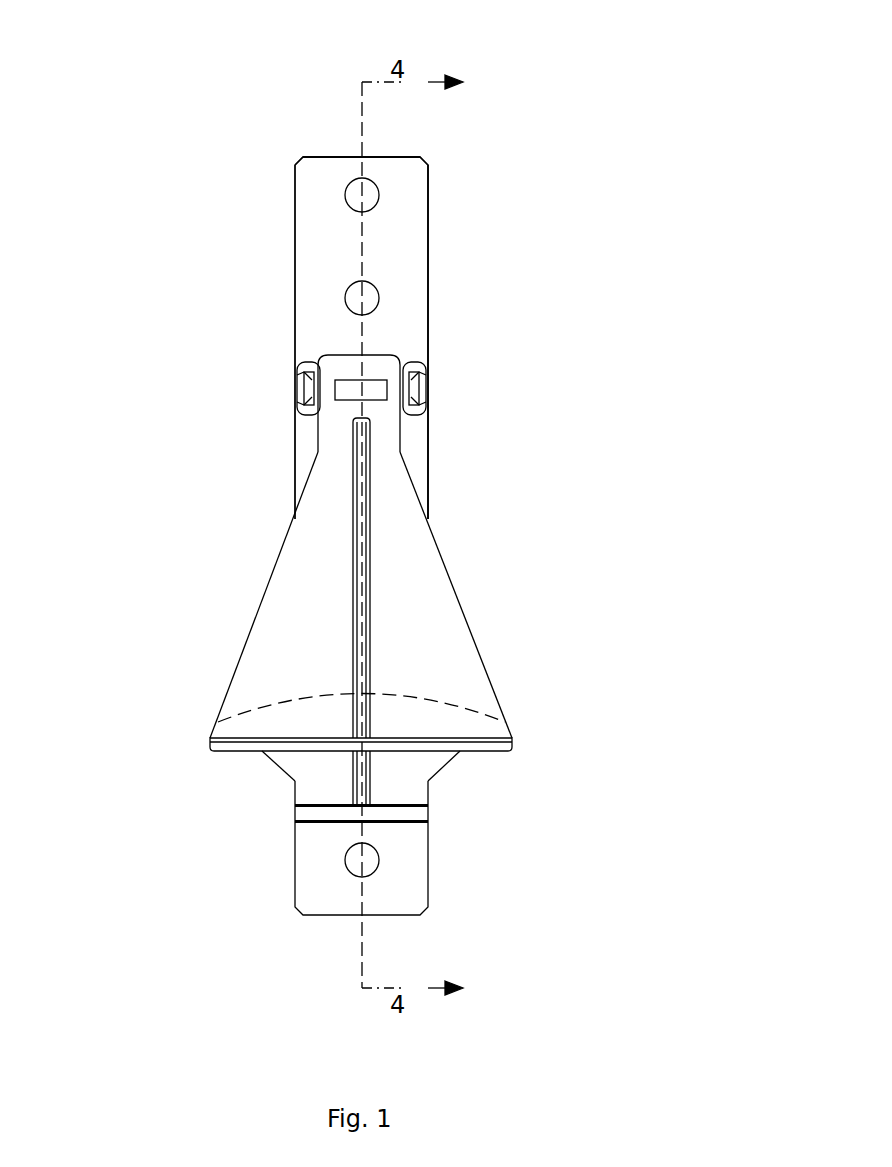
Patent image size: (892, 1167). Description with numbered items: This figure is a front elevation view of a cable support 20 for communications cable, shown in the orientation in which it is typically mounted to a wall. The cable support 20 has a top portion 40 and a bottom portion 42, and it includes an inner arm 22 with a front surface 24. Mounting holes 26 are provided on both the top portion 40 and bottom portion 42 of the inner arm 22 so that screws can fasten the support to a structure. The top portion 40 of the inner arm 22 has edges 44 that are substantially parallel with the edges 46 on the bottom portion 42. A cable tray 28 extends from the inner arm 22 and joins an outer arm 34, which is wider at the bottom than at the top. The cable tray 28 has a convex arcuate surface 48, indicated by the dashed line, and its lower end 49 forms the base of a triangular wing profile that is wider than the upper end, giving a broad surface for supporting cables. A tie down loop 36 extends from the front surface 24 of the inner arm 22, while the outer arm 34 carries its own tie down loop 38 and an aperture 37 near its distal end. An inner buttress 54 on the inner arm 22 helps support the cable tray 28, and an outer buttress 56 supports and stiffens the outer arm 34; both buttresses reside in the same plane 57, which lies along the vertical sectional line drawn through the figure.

The cable support 20 is at (188, 172).
The inner arm 22 is at (428, 243).
The front surface 24 is at (343, 261).
The mounting holes 26 is at (363, 196).
The cable tray 28 is at (483, 718).
The outer arm 34 is at (326, 596).
The tie down loop 36 is at (297, 390).
The aperture 37 is at (350, 398).
The tie down loop 38 is at (345, 368).
The top portion 40 is at (295, 278).
The bottom portion 42 is at (295, 865).
The edges 44 is at (430, 305).
The edges 46 is at (428, 864).
The convex arcuate surface 48 is at (422, 700).
The lower end 49 is at (480, 752).
The inner buttress 54 is at (355, 773).
The outer buttress 56 is at (372, 592).
The plane 57 is at (362, 333).